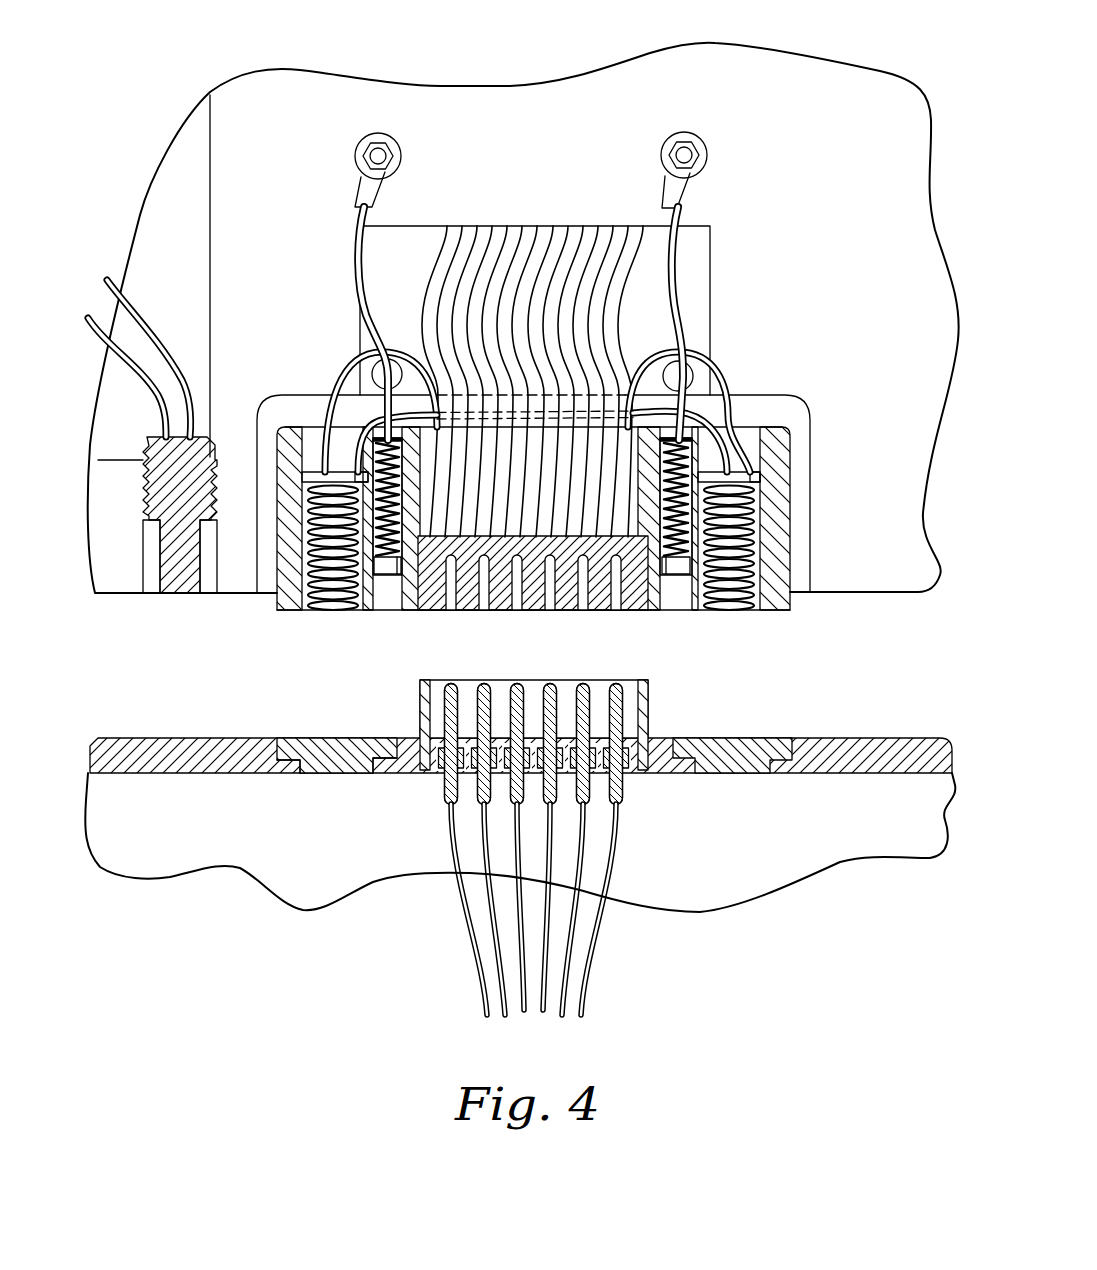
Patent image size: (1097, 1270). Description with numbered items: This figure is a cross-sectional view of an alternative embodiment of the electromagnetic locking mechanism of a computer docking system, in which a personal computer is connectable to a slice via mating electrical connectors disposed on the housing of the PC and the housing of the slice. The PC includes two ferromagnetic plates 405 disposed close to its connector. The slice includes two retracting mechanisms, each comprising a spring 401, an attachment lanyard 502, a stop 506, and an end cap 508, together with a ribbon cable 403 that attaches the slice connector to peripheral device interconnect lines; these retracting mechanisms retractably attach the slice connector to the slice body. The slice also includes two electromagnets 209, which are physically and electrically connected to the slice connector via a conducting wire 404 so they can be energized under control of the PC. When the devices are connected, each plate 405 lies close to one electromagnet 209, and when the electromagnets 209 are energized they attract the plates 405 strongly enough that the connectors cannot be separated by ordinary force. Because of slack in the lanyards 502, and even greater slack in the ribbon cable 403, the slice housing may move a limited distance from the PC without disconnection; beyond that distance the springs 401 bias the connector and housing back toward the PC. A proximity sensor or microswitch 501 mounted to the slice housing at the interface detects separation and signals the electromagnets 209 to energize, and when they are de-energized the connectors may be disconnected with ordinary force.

The proximity sensor or microswitch 501 is at (178, 594).
The ribbon cable 403 is at (506, 226).
The electromagnet 209 is at (333, 609).
The end cap 508 is at (388, 575).
The stop 506 is at (380, 362).
The conducting wire 404 is at (337, 373).
The spring 401 is at (340, 417).
The attachment lanyard 502 is at (358, 247).
The ferromagnetic plate 405 is at (327, 774).